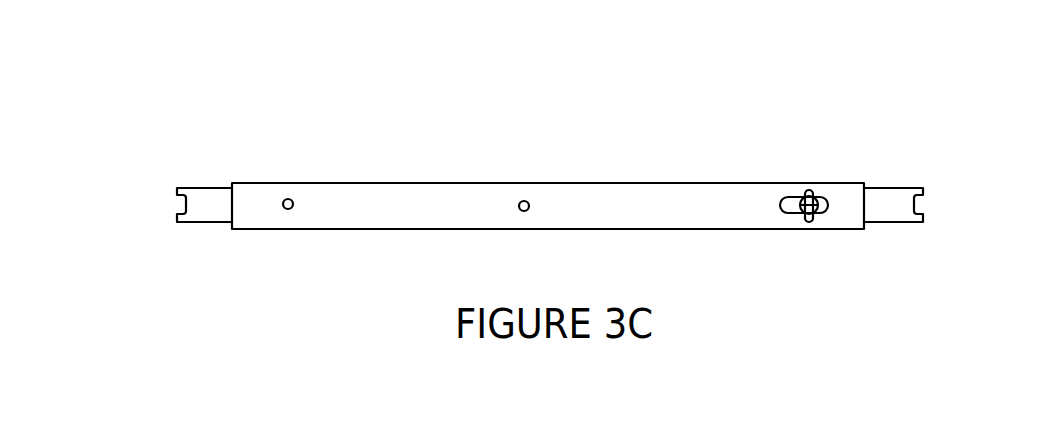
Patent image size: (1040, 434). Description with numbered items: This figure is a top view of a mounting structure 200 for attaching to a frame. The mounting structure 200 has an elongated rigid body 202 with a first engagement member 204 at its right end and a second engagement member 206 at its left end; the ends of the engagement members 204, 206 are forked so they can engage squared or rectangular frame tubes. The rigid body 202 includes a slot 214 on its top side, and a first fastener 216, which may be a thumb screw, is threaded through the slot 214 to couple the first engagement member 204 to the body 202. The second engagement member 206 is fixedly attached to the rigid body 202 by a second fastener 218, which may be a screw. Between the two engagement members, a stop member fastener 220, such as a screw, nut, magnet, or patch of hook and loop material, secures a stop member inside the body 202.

The mounting structure 200 is at (348, 45).
The rigid body 202 is at (433, 183).
The first engagement member 204 is at (920, 189).
The second engagement member 206 is at (181, 187).
The slot 214 is at (795, 202).
The first fastener 216 is at (812, 196).
The second fastener 218 is at (290, 199).
The stop member fastener 220 is at (526, 201).